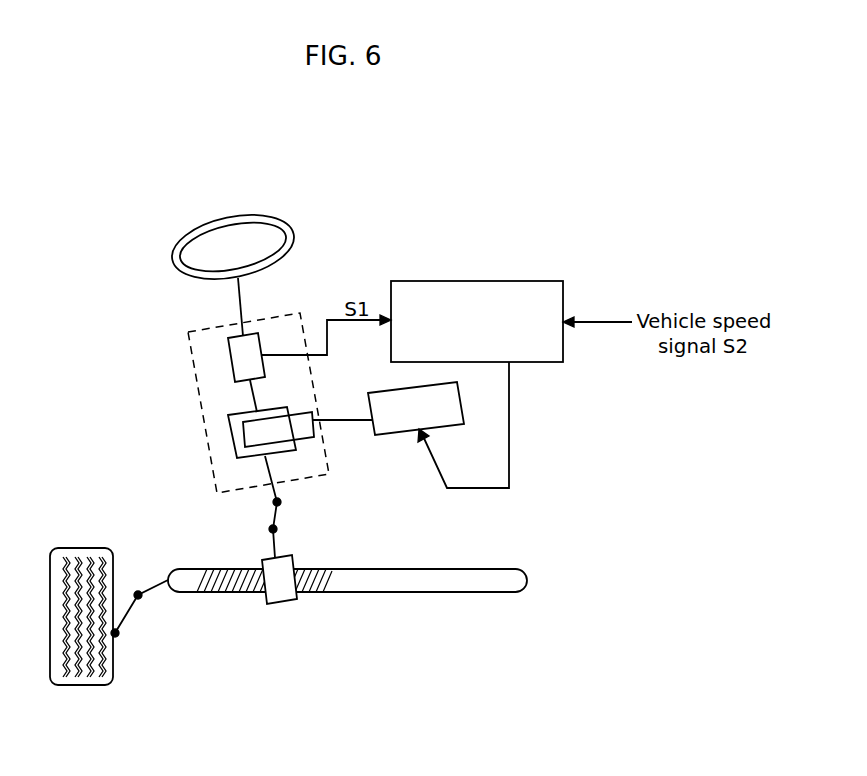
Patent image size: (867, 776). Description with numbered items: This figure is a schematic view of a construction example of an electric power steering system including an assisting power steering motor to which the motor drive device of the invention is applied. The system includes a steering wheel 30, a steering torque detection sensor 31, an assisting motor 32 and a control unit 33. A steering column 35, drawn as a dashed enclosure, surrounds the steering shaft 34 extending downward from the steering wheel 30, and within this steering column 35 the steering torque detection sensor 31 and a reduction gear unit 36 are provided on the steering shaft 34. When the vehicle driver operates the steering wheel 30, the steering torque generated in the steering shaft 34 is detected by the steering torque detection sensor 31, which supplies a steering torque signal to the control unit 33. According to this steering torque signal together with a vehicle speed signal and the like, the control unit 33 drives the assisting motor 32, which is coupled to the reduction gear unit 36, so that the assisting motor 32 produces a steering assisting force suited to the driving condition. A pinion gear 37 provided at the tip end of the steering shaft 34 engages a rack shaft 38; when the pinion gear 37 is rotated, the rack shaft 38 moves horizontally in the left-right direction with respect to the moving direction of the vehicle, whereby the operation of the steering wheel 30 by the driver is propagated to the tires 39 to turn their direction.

The steering wheel 30 is at (223, 217).
The steering torque detection sensor 31 is at (230, 362).
The assisting motor 32 is at (368, 393).
The control unit 33 is at (467, 281).
The steering shaft 34 is at (255, 398).
The steering column 35 is at (303, 308).
The reduction gear unit 36 is at (230, 437).
The pinion gear 37 is at (278, 606).
The rack shaft 38 is at (410, 568).
The tires 39 is at (87, 547).